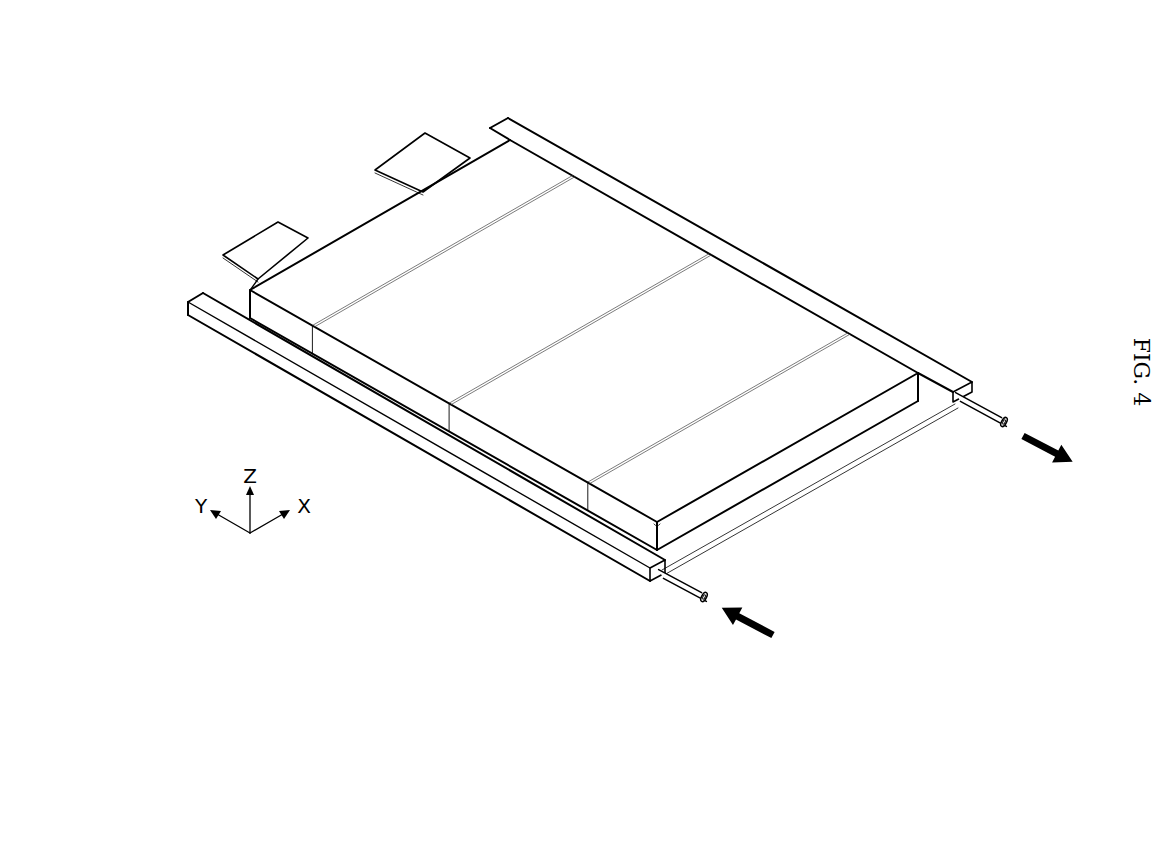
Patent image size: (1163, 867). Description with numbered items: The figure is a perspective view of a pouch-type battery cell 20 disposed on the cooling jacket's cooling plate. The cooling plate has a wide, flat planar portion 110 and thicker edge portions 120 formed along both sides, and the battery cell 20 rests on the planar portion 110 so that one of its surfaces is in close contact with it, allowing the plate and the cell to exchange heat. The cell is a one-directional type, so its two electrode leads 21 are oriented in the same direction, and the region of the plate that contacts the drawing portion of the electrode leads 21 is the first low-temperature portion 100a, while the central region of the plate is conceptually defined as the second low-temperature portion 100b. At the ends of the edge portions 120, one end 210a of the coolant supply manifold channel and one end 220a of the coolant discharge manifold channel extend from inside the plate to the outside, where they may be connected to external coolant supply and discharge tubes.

The battery cell 20 is at (308, 300).
The electrode lead 21 is at (400, 168).
The first low-temperature portion 100a is at (541, 111).
The second low-temperature portion 100b is at (689, 194).
The planar portion 110 is at (575, 328).
The edge portion 120 is at (917, 362).
The one end of the coolant supply manifold channel 210a is at (683, 583).
The one end of the coolant discharge manifold channel 220a is at (980, 402).